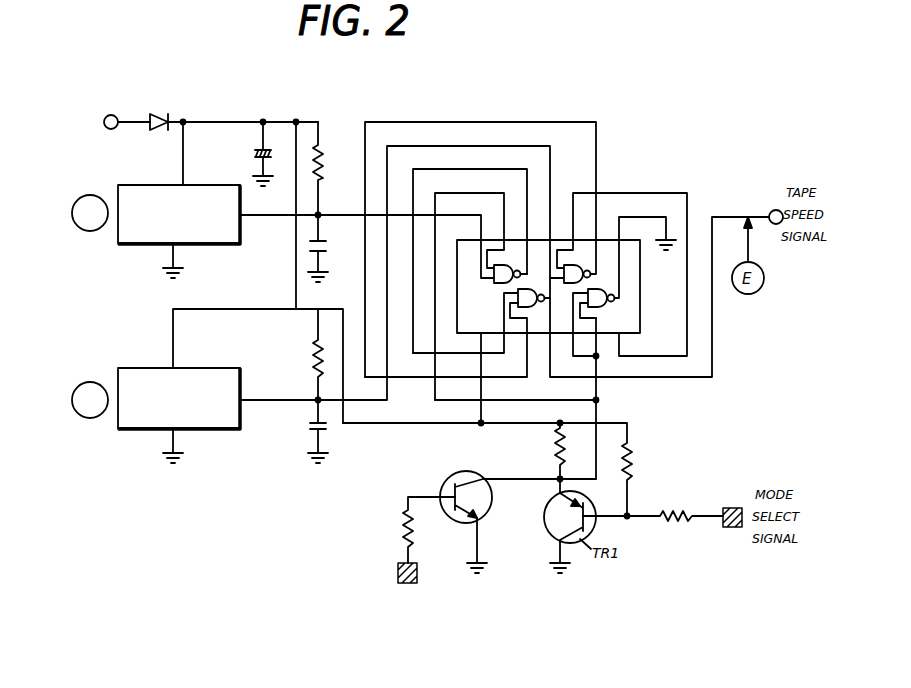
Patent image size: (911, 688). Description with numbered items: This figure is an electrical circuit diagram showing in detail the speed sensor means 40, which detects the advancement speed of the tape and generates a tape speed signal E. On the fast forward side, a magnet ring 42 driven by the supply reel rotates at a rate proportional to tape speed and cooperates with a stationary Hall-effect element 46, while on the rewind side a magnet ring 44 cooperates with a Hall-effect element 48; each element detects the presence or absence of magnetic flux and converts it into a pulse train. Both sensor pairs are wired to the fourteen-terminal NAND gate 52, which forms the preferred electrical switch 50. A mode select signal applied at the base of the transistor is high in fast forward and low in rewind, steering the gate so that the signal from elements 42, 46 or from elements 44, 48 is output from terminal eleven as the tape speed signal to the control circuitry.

The speed sensor means 40 is at (590, 107).
The magnet ring 42 is at (74, 230).
The magnet ring 44 is at (73, 410).
The Hall-effect element 46 is at (131, 248).
The Hall-effect element 48 is at (124, 430).
The switch 50 is at (383, 436).
The NAND gate 52 is at (624, 288).